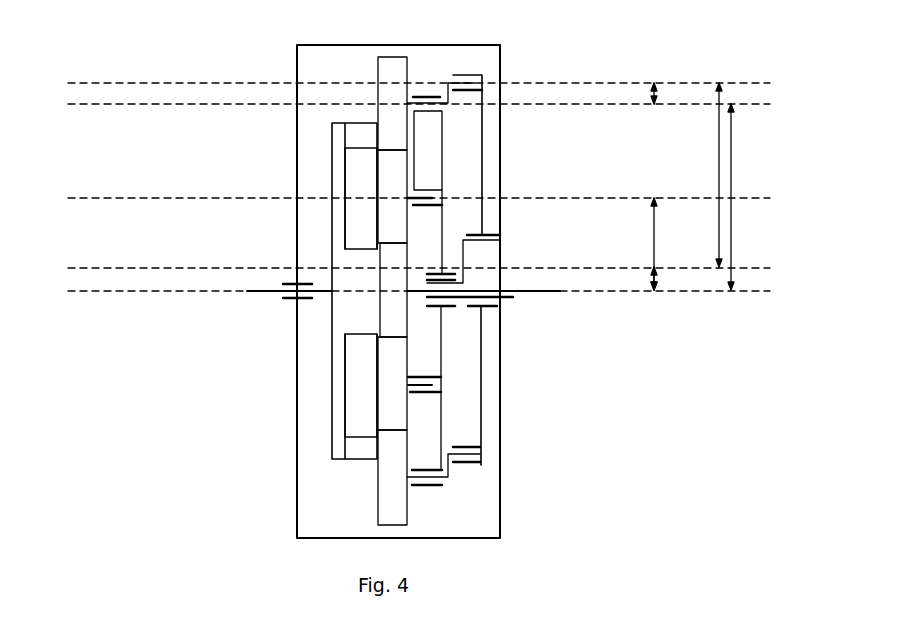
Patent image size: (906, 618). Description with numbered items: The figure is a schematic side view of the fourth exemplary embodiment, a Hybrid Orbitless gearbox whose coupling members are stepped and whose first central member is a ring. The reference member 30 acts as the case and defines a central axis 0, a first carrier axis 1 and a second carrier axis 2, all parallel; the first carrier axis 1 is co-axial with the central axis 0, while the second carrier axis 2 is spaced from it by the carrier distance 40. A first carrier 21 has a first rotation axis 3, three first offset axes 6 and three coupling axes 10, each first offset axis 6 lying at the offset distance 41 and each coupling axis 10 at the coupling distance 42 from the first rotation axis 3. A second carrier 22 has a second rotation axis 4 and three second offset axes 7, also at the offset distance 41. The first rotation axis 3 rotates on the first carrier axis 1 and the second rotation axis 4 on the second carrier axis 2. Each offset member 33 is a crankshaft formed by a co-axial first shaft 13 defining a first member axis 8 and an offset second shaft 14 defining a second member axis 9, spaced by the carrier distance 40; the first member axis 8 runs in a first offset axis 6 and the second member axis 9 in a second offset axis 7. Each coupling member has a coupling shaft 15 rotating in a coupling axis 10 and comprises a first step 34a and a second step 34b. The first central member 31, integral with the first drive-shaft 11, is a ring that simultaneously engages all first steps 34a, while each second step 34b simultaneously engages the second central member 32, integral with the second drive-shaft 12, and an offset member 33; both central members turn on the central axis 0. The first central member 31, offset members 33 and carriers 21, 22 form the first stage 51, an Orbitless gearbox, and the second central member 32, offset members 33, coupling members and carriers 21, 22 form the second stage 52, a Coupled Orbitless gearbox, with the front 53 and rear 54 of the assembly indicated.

The central axis 0 is at (410, 317).
The first carrier axis 1 is at (410, 317).
The second carrier axis 2 is at (416, 244).
The first rotation axis 3 is at (100, 291).
The second rotation axis 4 is at (100, 268).
The first offset axis 6 is at (419, 131).
The second offset axis 7 is at (417, 56).
The first member axis 8 is at (105, 105).
The second member axis 9 is at (103, 82).
The coupling axis 10 is at (132, 198).
The first drive-shaft 11 is at (282, 298).
The second drive-shaft 12 is at (542, 292).
The first shaft 13 is at (418, 470).
The second shaft 14 is at (458, 449).
The coupling shaft 15 is at (419, 377).
The first carrier 21 is at (441, 140).
The second carrier 22 is at (481, 177).
The reference member 30 is at (327, 538).
The first central member 31 is at (350, 133).
The second central member 32 is at (403, 262).
The offset member 33 is at (402, 84).
The first step 34a is at (368, 238).
The second step 34b is at (396, 180).
The carrier distance 40 is at (660, 95).
The offset distance 41 is at (722, 158).
The coupling distance 42 is at (655, 248).
The first stage 51 is at (320, 400).
The second stage 52 is at (423, 410).
The front 53 is at (138, 358).
The rear 54 is at (657, 322).